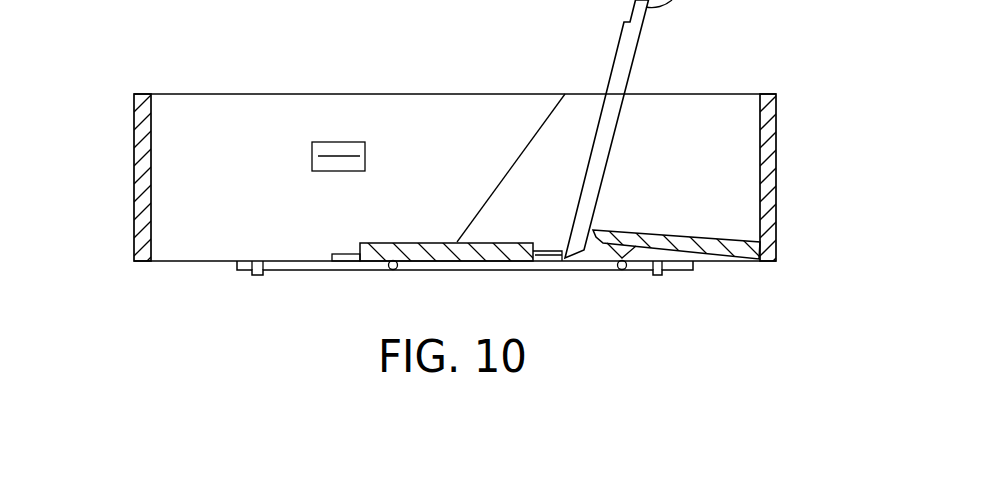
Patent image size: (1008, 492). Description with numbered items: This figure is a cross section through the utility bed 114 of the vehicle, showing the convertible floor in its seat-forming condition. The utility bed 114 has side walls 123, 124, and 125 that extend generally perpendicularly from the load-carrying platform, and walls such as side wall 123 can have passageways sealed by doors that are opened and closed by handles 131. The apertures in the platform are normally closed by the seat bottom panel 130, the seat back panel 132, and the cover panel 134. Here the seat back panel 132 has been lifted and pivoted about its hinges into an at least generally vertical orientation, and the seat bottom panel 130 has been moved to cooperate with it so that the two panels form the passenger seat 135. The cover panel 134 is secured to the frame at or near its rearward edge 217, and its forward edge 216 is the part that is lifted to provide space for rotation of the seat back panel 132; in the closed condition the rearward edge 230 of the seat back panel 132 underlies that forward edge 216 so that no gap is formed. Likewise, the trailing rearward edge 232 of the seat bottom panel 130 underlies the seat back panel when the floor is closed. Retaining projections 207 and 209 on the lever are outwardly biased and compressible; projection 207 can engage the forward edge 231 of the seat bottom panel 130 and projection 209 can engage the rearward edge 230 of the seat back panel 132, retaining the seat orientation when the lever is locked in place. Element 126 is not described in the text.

The utility bed 114 is at (254, 86).
The side wall 123 is at (457, 130).
The side wall 124 is at (145, 183).
The side wall 125 is at (202, 122).
The second side wall 126 is at (777, 152).
The seat bottom panel 130 is at (428, 250).
The handle 131 is at (342, 150).
The seat back panel 132 is at (616, 80).
The cover panel 134 is at (712, 246).
The passenger seat 135 is at (576, 124).
The retaining projection 207 is at (345, 262).
The retaining projection 209 is at (548, 263).
The forward edge 216 is at (595, 228).
The rearward edge 217 is at (760, 260).
The rearward edge 230 is at (588, 263).
The forward edge 231 is at (360, 243).
The trailing rearward edge 232 is at (547, 247).